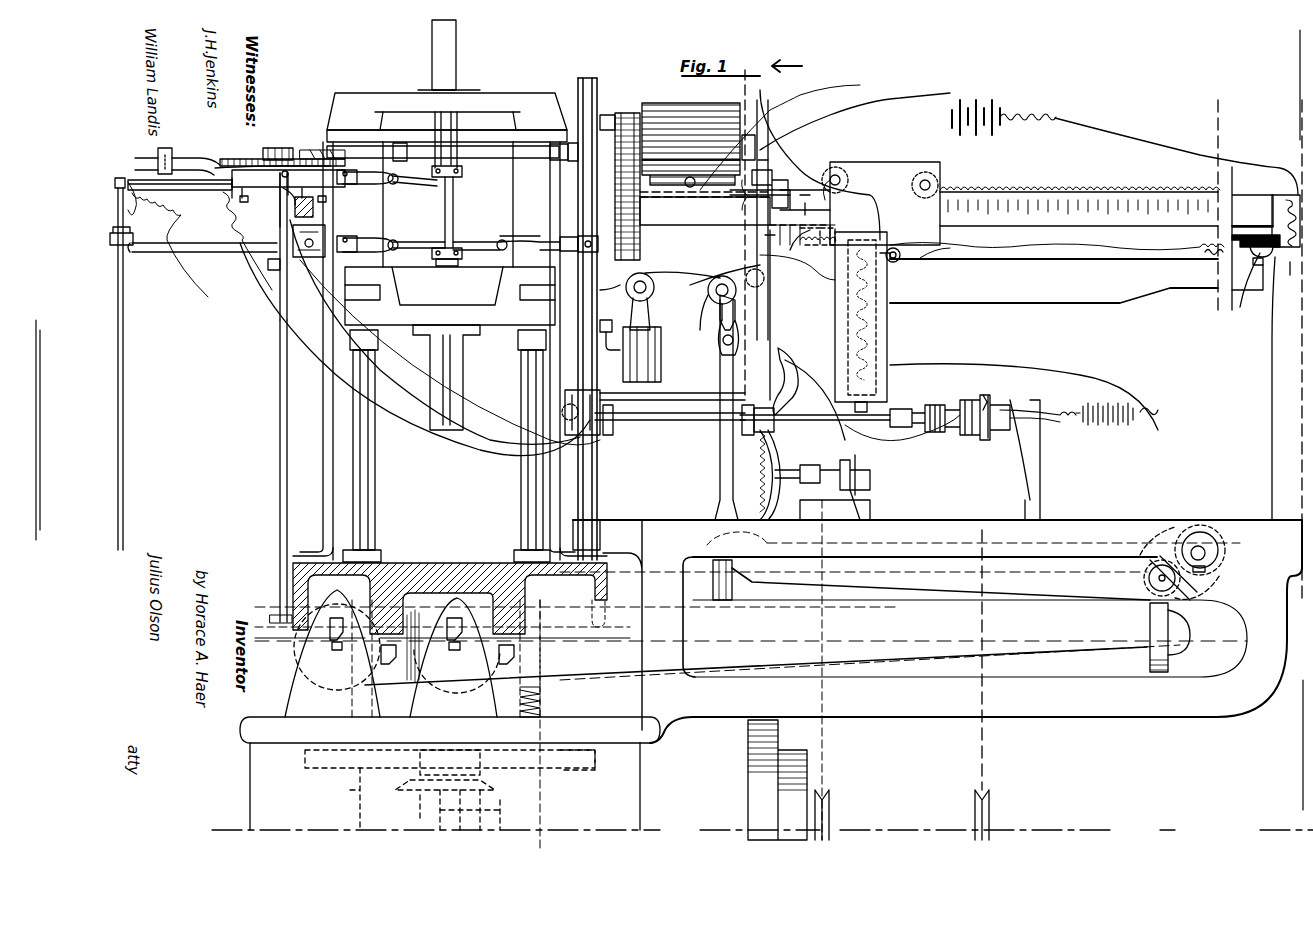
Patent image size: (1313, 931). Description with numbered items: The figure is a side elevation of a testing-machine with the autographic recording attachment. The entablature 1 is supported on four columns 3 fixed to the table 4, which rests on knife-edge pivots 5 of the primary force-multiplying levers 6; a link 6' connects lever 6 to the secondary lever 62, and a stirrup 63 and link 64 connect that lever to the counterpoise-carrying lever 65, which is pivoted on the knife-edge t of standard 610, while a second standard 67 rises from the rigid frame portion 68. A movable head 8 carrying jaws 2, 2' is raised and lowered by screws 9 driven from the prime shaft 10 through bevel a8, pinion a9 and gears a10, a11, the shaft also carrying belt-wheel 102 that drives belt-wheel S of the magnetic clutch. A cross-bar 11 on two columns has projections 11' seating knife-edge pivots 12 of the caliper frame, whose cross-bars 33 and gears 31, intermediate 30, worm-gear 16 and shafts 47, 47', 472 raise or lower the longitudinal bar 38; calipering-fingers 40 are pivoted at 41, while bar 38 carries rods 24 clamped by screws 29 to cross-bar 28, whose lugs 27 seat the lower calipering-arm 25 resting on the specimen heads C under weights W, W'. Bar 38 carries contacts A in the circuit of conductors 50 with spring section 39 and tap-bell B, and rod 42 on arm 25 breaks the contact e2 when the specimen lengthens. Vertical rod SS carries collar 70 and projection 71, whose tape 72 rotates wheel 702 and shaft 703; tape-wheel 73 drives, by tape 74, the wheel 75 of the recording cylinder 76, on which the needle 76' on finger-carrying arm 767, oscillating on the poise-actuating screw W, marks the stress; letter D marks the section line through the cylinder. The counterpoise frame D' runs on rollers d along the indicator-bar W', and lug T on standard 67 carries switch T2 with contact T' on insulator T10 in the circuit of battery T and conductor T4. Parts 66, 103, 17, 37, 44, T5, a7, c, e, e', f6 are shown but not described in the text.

The entablature 1 is at (385, 90).
The jaw 2 is at (463, 140).
The jaw 2' is at (472, 288).
The columns 3 is at (527, 198).
The table 4 is at (450, 572).
The knife-edge pivots 5 is at (330, 633).
The primary force-multiplying lever 6 is at (778, 675).
The link 6' is at (1189, 614).
The secondary lever 62 is at (1020, 590).
The stirrup 63 is at (732, 590).
The link 64 is at (715, 330).
The counterpoise-carrying lever 65 is at (1020, 282).
The rocker 66 is at (708, 288).
The standard 67 is at (1270, 430).
The rigid frame portion 68 is at (1185, 520).
The standard 610 is at (765, 315).
The movable head 8 is at (400, 320).
The screws 9 is at (555, 693).
The prime shaft 10 is at (690, 818).
The belt-wheel 102 is at (992, 800).
The center line 103 is at (985, 750).
The cross-bar 11 is at (275, 214).
The upward projections 11' is at (272, 200).
The knife-edge pivots 12 is at (288, 174).
The worm-gear 16 is at (270, 148).
The base bar 17 is at (762, 773).
The rods 24 is at (280, 432).
The lower calipering-arm 25 is at (190, 252).
The lugs 27 is at (265, 250).
The cross-bar 28 is at (284, 268).
The screws 29 is at (268, 270).
The intermediate gear 30 is at (230, 160).
The gears 31 is at (220, 165).
The cross-bars 33 is at (285, 203).
The rod 37 is at (450, 190).
The longitudinal bar 38 is at (180, 190).
The spring section 39 is at (120, 178).
The calipering-fingers 40 is at (423, 175).
The pivot 41 is at (358, 186).
The rod 42 is at (123, 335).
The block 44 is at (285, 148).
The shaft 47 is at (452, 166).
The shaft 47' is at (900, 424).
The vertical shaft 472 is at (580, 285).
The line conductor 50 is at (202, 244).
The collar 70 is at (612, 400).
The wheel 702 is at (608, 435).
The shaft 703 is at (668, 423).
The projection 71 is at (612, 320).
The metallic tape 72 is at (661, 360).
The tape-carrying wheel 73 is at (750, 432).
The metallic tape 74 is at (777, 187).
The wheel 75 is at (785, 128).
The impression-receiving cylinder 76 is at (705, 136).
The needle 76' is at (825, 137).
The finger-carrying arm 767 is at (690, 187).
The electrical contacts A is at (133, 190).
The tap-bell B is at (790, 355).
The heads C is at (462, 175).
The section line D is at (685, 161).
The counterpoise-carrying frame D' is at (855, 189).
The belt-wheel S is at (445, 213).
The vertical rod SS is at (608, 82).
The battery T is at (1127, 340).
The contact T' is at (1248, 291).
The automatic switch T2 is at (1284, 388).
The line conductor T4 is at (1215, 205).
The coil T5 is at (1275, 150).
The insulator T10 is at (1233, 237).
The poise-actuating screw W is at (717, 196).
The indicator-carrying bar W' is at (581, 186).
The foundation a7 is at (440, 805).
The bevel a8 is at (488, 815).
The pinion a9 is at (450, 762).
The gear a10 is at (466, 761).
The gear a11 is at (325, 772).
The slide c is at (745, 243).
The rollers d is at (950, 178).
The bracket e is at (120, 246).
The pivot e' is at (890, 253).
The contact e2 is at (845, 243).
The wire f6 is at (940, 247).
The knife-edge pivot t is at (765, 278).